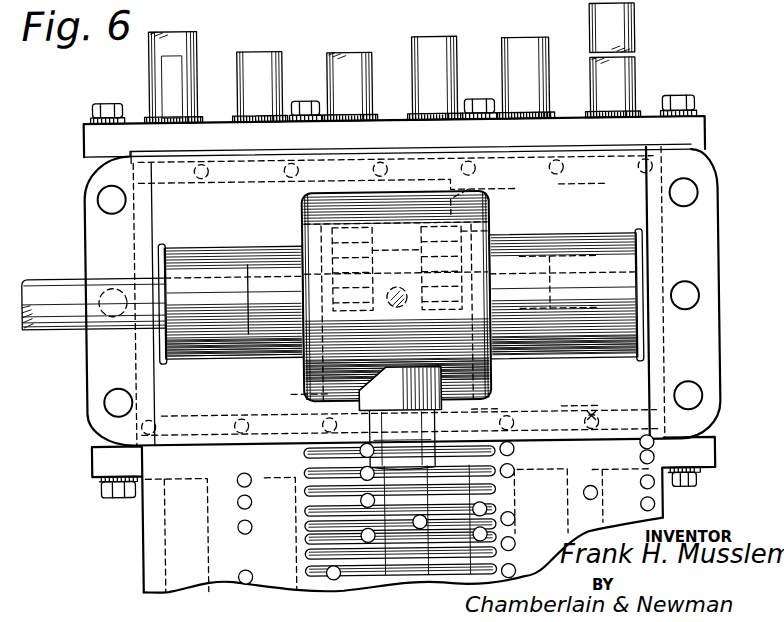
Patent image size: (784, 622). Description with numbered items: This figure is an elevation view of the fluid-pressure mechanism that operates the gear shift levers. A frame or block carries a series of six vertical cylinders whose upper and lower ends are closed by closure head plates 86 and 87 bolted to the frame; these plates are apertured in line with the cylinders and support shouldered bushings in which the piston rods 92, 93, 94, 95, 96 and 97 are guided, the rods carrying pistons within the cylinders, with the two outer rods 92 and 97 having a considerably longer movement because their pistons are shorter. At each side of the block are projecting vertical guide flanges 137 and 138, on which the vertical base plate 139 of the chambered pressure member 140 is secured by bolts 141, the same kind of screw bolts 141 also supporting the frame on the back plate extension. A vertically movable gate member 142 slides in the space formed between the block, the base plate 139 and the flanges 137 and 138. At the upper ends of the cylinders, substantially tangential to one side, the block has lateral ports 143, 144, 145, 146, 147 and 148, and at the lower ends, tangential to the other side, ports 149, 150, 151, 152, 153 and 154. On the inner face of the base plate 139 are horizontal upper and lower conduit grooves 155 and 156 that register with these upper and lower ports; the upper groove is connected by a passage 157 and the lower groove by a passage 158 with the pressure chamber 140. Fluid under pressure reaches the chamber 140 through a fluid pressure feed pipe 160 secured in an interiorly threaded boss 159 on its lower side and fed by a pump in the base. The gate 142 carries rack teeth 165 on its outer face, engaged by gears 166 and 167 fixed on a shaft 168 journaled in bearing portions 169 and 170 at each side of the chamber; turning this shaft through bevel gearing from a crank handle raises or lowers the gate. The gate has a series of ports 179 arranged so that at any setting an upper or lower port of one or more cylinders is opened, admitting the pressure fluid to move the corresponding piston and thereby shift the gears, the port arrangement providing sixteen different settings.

The closure head plate 86 is at (643, 126).
The closure head plate 87 is at (700, 464).
The piston rod 92 is at (620, 40).
The piston rod 93 is at (530, 38).
The piston rod 94 is at (462, 31).
The piston rod 95 is at (360, 52).
The piston rod 96 is at (272, 49).
The piston rod 97 is at (190, 44).
The vertical guide flange 137 is at (662, 264).
The vertical guide flange 138 is at (137, 233).
The vertical base plate 139 is at (636, 228).
The chambered pressure member 140 is at (525, 287).
The screw bolt 141 is at (112, 196).
The gate member 142 is at (401, 516).
The lateral port 143 is at (660, 144).
The lateral port 144 is at (562, 161).
The lateral port 145 is at (478, 163).
The lateral port 146 is at (400, 143).
The lateral port 147 is at (300, 161).
The lateral port 148 is at (213, 160).
The port 149 is at (605, 404).
The port 150 is at (548, 400).
The port 151 is at (500, 418).
The port 152 is at (322, 413).
The port 153 is at (245, 421).
The port 154 is at (158, 420).
The upper conduit groove 155 is at (590, 187).
The lower conduit groove 156 is at (567, 408).
The passage 157 is at (465, 205).
The passage 158 is at (300, 392).
The interiorly threaded boss 159 is at (485, 410).
The fluid pressure feed pipe 160 is at (303, 452).
The rack teeth 165 is at (313, 556).
The gear 166 is at (468, 232).
The gear 167 is at (302, 236).
The shaft 168 is at (50, 290).
The bearing portion 169 is at (535, 255).
The bearing portion 170 is at (260, 280).
The port 179 is at (233, 585).